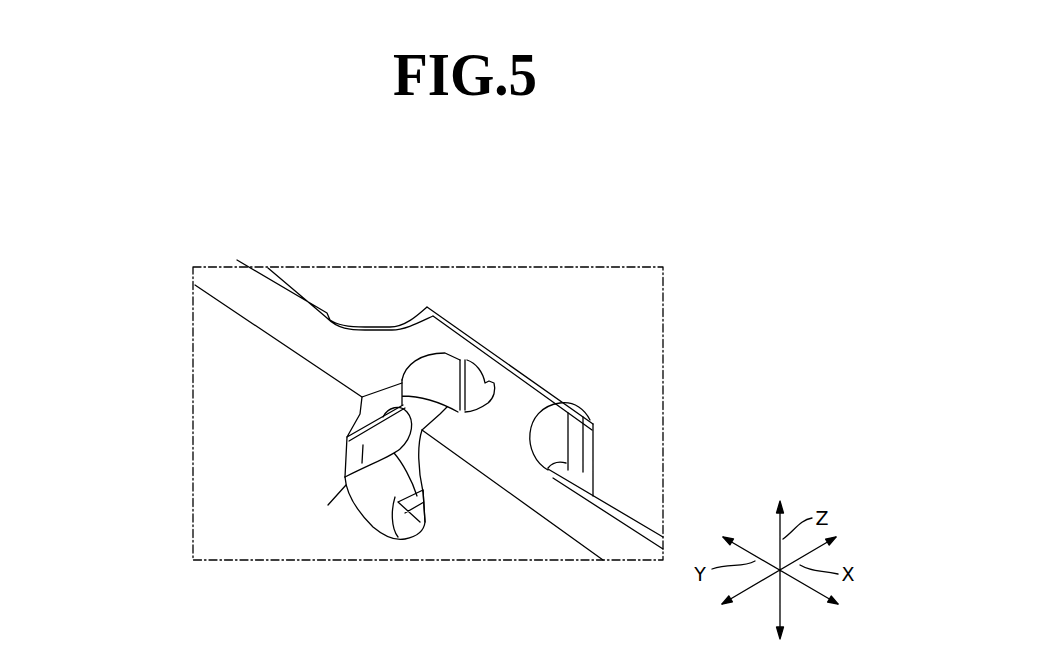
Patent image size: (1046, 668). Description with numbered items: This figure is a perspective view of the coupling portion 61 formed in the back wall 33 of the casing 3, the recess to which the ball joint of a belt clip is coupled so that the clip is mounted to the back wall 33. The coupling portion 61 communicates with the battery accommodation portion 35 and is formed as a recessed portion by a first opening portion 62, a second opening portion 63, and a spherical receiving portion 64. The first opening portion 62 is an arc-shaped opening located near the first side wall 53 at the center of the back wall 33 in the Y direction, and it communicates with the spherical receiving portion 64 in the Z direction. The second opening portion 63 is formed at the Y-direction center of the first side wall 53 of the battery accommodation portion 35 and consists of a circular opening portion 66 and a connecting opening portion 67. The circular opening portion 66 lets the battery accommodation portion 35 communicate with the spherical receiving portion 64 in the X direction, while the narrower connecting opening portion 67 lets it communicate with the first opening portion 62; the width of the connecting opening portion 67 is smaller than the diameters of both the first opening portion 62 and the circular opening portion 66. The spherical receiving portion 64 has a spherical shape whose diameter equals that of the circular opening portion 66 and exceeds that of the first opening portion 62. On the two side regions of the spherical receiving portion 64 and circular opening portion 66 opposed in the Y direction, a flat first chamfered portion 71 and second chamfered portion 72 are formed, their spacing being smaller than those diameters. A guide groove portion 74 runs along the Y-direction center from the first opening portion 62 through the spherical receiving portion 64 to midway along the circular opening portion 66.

The casing 3 is at (620, 488).
The back wall 33 is at (567, 507).
The battery accommodation portion 35 is at (228, 402).
The first side wall 53 is at (222, 467).
The coupling portion 61 is at (448, 368).
The first opening portion 62 is at (481, 384).
The second opening portion 63 is at (332, 183).
The spherical receiving portion 64 is at (421, 436).
The circular opening portion 66 is at (376, 500).
The connecting opening portion 67 is at (386, 397).
The first chamfered portion 71 is at (350, 481).
The second chamfered portion 72 is at (392, 541).
The guide groove portion 74 is at (472, 362).